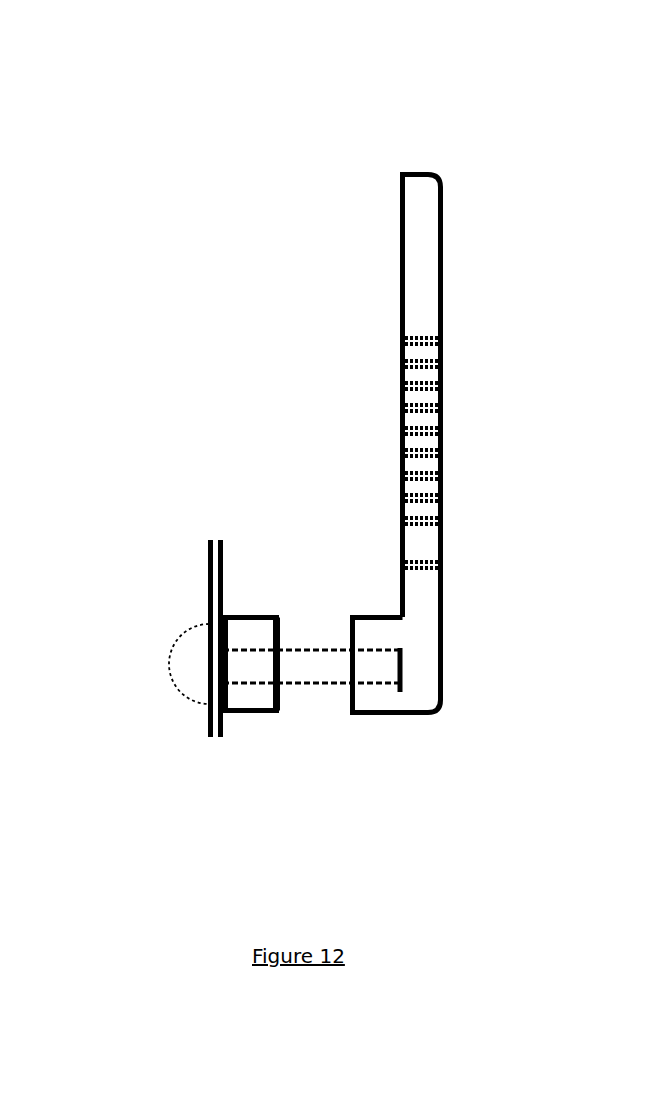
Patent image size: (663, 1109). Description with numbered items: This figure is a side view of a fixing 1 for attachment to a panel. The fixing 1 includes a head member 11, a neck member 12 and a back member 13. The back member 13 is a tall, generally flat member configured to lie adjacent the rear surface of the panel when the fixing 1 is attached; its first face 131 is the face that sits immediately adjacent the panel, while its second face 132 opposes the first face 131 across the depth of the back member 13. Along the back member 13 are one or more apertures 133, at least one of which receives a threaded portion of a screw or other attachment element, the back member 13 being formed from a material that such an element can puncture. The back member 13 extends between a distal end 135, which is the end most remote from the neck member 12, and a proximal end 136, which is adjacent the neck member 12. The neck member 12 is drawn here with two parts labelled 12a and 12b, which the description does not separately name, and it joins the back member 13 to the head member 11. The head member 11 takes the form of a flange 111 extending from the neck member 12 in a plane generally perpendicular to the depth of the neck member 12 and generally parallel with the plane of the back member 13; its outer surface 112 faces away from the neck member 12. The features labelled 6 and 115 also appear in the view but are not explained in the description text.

The fixing 1 is at (176, 337).
The fastener head 6 is at (180, 668).
The head member 11 is at (215, 715).
The flange 111 is at (212, 733).
The outer surface 112 is at (208, 598).
The upper end of base plate 115 is at (210, 567).
The neck member 12 is at (392, 610).
The first connecting member 12a is at (243, 700).
The second connecting member 12b is at (366, 700).
The back member 13 is at (422, 228).
The first face 131 is at (402, 258).
The second face 132 is at (440, 257).
The apertures 133 is at (447, 332).
The distal end 135 is at (410, 142).
The proximal end 136 is at (455, 746).